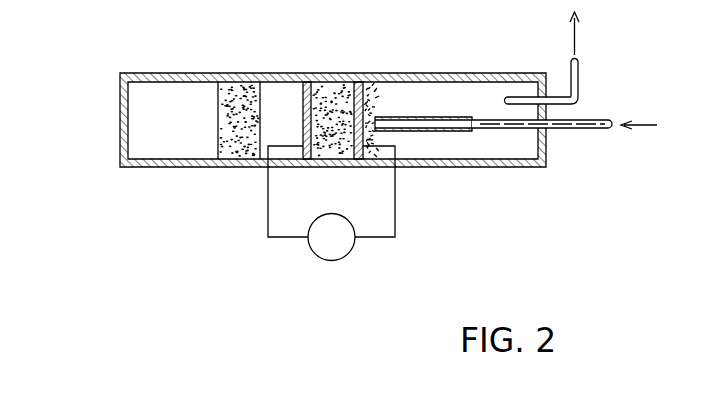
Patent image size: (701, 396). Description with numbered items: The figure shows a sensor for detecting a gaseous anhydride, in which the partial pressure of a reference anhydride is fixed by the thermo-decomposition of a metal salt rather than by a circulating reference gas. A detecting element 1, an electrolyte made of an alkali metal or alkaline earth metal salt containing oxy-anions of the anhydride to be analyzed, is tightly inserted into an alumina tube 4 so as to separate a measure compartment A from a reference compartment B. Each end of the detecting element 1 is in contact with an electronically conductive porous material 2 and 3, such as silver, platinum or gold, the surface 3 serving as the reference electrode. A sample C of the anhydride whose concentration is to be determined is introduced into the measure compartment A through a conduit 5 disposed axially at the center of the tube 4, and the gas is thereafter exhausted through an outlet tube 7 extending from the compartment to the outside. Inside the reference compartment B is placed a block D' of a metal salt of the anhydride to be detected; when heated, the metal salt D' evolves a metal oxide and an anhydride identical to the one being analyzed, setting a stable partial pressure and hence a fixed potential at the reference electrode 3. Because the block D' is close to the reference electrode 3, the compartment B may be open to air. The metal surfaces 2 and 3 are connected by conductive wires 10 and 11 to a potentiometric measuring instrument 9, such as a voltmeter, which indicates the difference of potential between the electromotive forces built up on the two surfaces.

The detecting element 1 is at (333, 90).
The electronically conductive porous material 2 is at (360, 85).
The reference electrode 3 is at (306, 80).
The tube 4 is at (520, 167).
The conduit 5 is at (572, 124).
The outlet tube 7 is at (580, 84).
The potentiometric measuring instrument 9 is at (320, 254).
The conductive wire 10 is at (395, 213).
The conductive wire 11 is at (268, 213).
The measure compartment A is at (452, 113).
The reference compartment B is at (273, 120).
The sample C is at (639, 117).
The block of metal salt D' is at (238, 102).